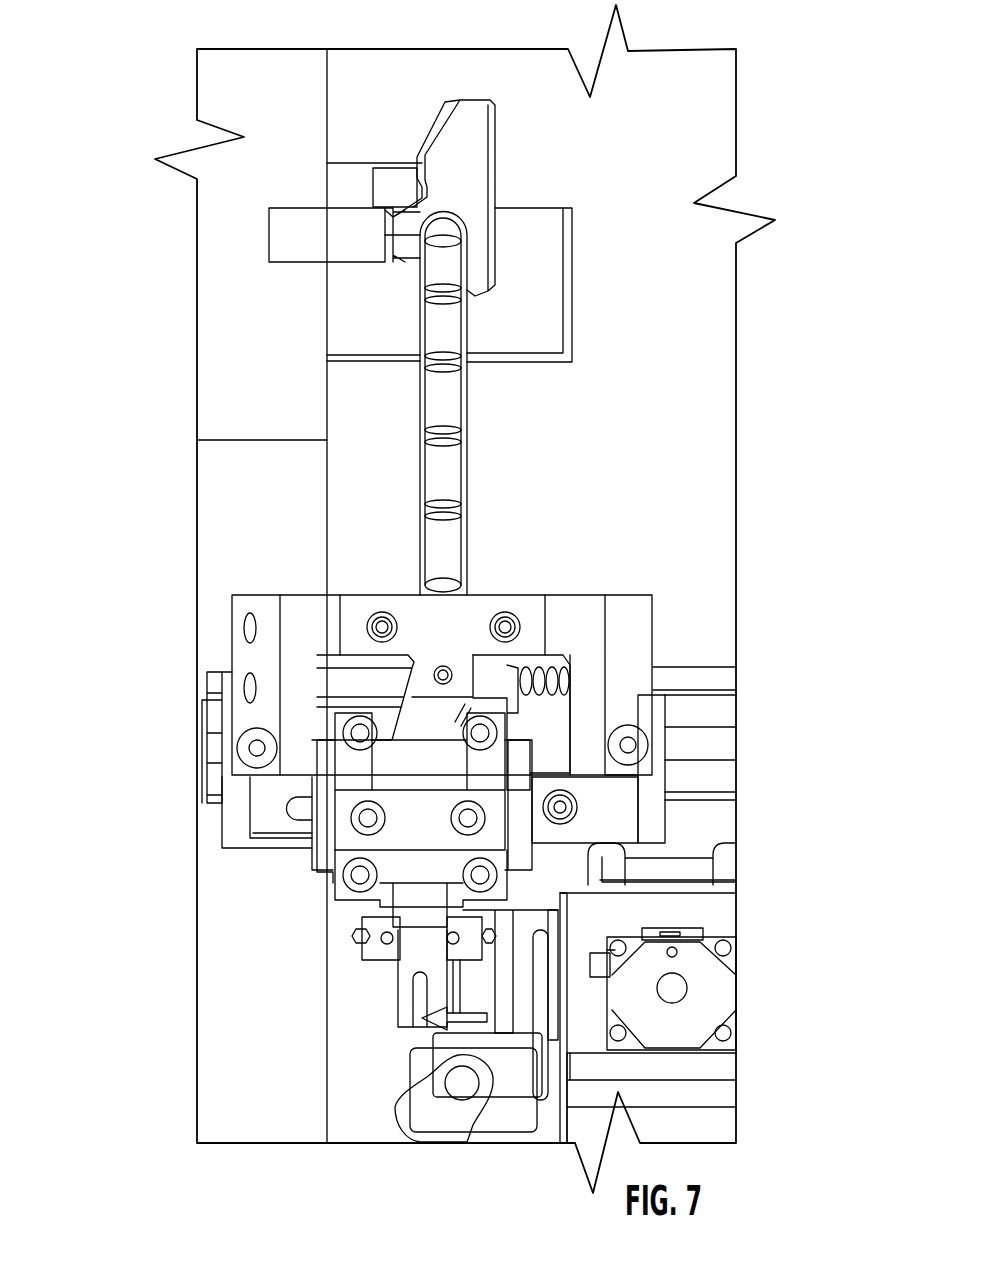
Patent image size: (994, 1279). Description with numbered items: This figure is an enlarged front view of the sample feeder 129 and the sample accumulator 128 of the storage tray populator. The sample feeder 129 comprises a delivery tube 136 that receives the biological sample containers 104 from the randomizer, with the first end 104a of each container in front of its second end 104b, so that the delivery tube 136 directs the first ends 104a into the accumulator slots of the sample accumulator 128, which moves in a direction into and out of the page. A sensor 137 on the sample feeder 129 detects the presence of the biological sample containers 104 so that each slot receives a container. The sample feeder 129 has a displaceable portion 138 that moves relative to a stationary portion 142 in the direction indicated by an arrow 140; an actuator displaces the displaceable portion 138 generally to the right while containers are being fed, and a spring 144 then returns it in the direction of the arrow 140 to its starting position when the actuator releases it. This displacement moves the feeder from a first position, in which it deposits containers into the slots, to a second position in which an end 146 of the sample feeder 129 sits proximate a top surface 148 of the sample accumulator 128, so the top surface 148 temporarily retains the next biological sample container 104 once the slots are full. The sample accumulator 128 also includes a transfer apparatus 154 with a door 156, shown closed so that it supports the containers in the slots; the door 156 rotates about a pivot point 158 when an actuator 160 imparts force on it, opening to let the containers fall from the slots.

The sample feeder 129 is at (748, 112).
The stationary portion 142 is at (102, 116).
The delivery tube 136 is at (469, 385).
The biological sample container 104 is at (457, 405).
The first end 104a is at (447, 477).
The second end 104b is at (432, 442).
The spring 144 is at (535, 688).
The displaceable portion 138 is at (165, 723).
The actuator 160 is at (520, 920).
The arrow 140 is at (473, 1013).
The sensor 137 is at (453, 965).
The end 146 is at (420, 1022).
The top surface 148 is at (420, 1040).
The transfer apparatus 154 is at (398, 1136).
The door 156 is at (437, 1122).
The pivot point 158 is at (466, 1092).
The sample accumulator 128 is at (510, 1100).